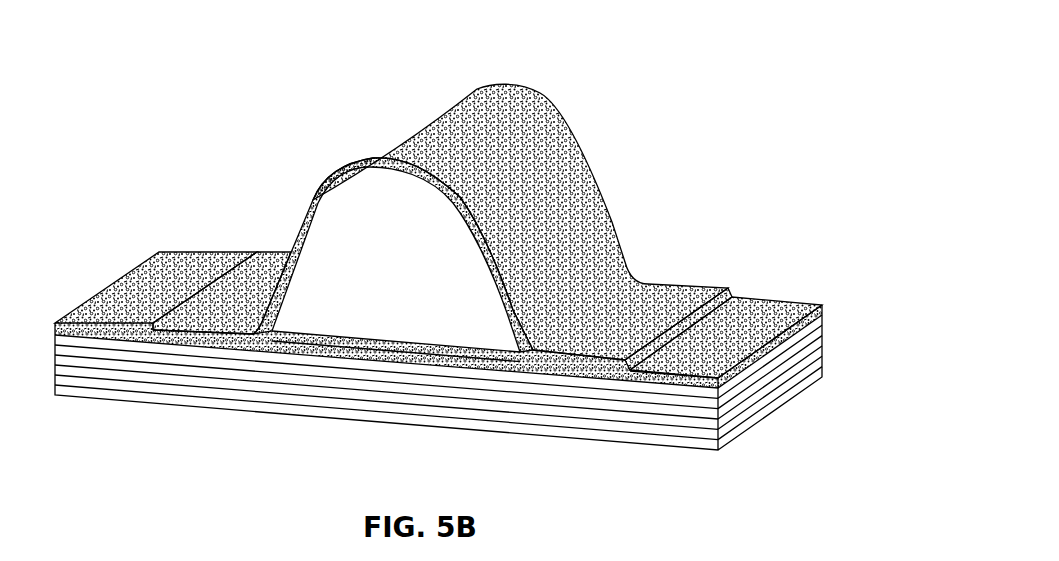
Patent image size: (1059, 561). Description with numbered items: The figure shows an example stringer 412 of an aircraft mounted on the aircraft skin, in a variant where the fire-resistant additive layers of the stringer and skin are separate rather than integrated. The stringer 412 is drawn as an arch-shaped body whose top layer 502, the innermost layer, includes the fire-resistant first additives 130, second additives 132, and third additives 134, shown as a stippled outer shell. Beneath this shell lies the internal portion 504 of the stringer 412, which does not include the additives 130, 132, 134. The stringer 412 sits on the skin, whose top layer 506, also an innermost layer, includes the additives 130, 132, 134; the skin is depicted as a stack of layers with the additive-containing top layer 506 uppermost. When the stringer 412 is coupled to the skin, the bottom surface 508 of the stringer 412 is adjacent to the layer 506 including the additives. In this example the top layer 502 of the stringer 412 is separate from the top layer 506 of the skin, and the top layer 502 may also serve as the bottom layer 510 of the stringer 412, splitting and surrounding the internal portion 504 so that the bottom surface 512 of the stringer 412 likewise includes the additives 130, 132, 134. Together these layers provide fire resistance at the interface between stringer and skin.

The stringer 412 is at (440, 210).
The top layer 502 is at (610, 215).
The internal portion 504 is at (340, 228).
The top layer of the skin 506 is at (150, 268).
The bottom surface of the stringer 508 is at (468, 347).
The bottom layer of the stringer 510 is at (283, 341).
The bottom surface 512 is at (327, 347).
The first additives 130 is at (754, 313).
The second additives 132 is at (754, 313).
The third additives 134 is at (742, 296).